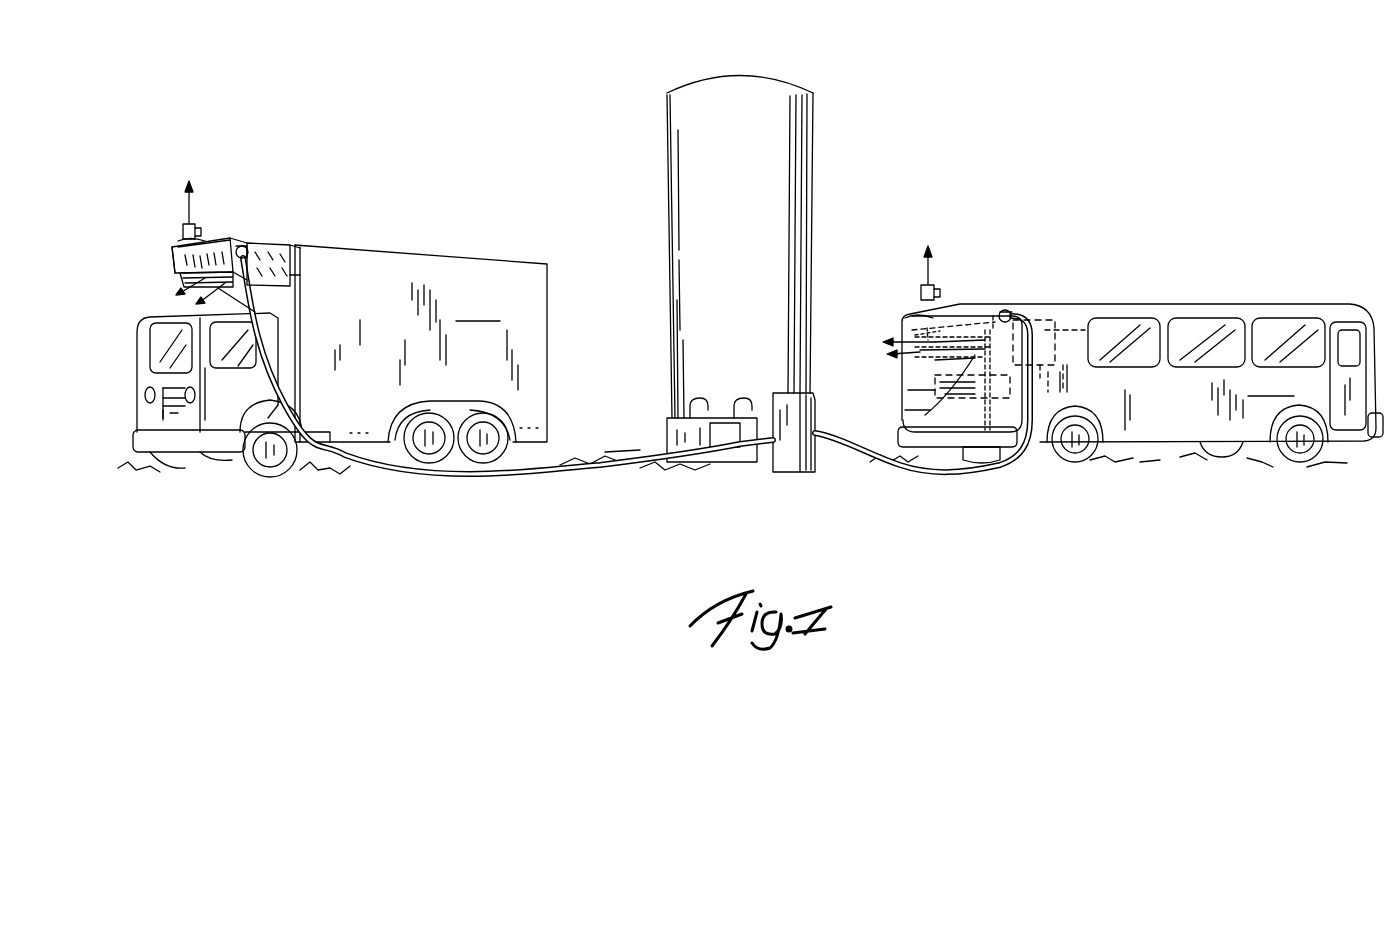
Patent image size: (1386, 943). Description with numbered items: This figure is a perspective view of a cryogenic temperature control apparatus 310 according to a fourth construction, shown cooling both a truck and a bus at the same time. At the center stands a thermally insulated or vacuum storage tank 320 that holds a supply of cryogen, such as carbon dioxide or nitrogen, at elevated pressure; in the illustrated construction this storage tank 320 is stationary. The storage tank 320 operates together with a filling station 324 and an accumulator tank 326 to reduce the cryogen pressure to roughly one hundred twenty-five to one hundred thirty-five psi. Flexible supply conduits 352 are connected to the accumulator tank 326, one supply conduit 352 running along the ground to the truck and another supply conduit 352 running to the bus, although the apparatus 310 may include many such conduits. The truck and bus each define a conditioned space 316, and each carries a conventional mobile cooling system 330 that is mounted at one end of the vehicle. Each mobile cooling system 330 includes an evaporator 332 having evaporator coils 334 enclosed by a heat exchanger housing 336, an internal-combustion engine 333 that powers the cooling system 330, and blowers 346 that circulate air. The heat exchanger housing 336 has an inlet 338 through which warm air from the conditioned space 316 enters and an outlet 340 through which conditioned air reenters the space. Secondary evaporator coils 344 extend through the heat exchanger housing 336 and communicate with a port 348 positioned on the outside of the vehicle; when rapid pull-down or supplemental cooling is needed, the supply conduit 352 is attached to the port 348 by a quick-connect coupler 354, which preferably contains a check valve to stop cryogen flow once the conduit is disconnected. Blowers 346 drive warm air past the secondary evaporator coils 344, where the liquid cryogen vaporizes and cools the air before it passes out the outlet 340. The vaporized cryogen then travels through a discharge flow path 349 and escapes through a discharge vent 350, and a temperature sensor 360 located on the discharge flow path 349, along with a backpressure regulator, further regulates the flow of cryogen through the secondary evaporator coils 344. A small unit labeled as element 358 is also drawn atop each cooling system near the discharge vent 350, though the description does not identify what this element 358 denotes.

The cryogenic temperature control apparatus 310 is at (876, 180).
The conditioned space 316 is at (758, 361).
The storage tank 320 is at (716, 165).
The filling station 324 is at (667, 418).
The accumulator tank 326 is at (793, 462).
The mobile cooling system 330 is at (303, 253).
The evaporator 332 is at (172, 258).
The internal-combustion engine 333 is at (163, 420).
The evaporator coil 334 is at (255, 313).
The heat exchanger housing 336 is at (333, 333).
The inlet 338 is at (291, 274).
The outlet 340 is at (180, 294).
The secondary evaporator coil 344 is at (185, 264).
The blower 346 is at (292, 244).
The port 348 is at (246, 246).
The discharge flow path 349 is at (203, 239).
The discharge vent 350 is at (182, 240).
The flexible supply conduit 352 is at (466, 478).
The quick-connect coupler 354 is at (255, 253).
The transmitter 358 is at (201, 223).
The temperature sensor 360 is at (176, 248).